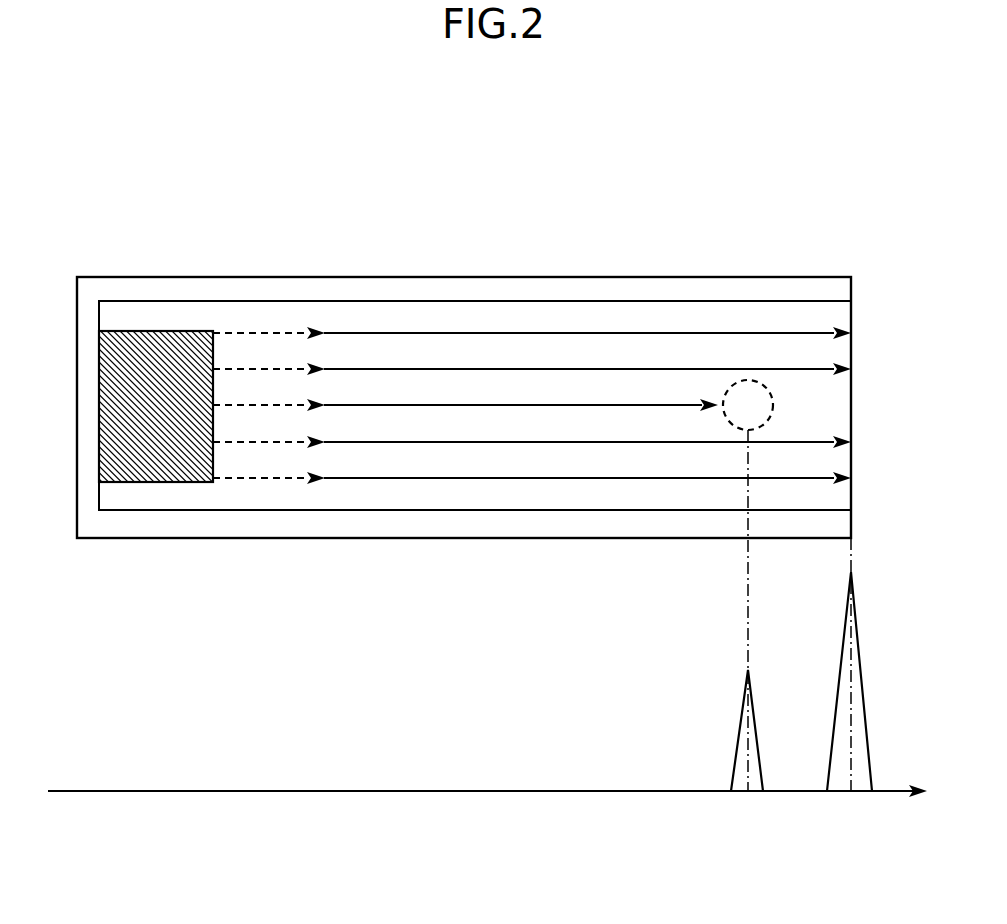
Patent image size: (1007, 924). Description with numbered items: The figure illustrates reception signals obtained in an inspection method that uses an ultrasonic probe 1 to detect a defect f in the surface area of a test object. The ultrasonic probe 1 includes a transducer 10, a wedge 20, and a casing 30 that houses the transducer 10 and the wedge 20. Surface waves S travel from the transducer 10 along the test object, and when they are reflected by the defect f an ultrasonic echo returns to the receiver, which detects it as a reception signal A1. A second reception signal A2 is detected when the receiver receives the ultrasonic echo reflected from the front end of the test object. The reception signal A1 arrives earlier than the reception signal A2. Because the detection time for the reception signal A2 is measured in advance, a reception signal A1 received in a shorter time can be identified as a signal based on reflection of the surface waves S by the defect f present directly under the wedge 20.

The ultrasonic probe 1 is at (294, 165).
The transducer 10 is at (151, 348).
The wedge 20 is at (213, 301).
The casing 30 is at (272, 277).
The surface waves S is at (583, 333).
The defect f is at (773, 405).
The reception signal A1 is at (737, 737).
The reception signal A2 is at (843, 637).